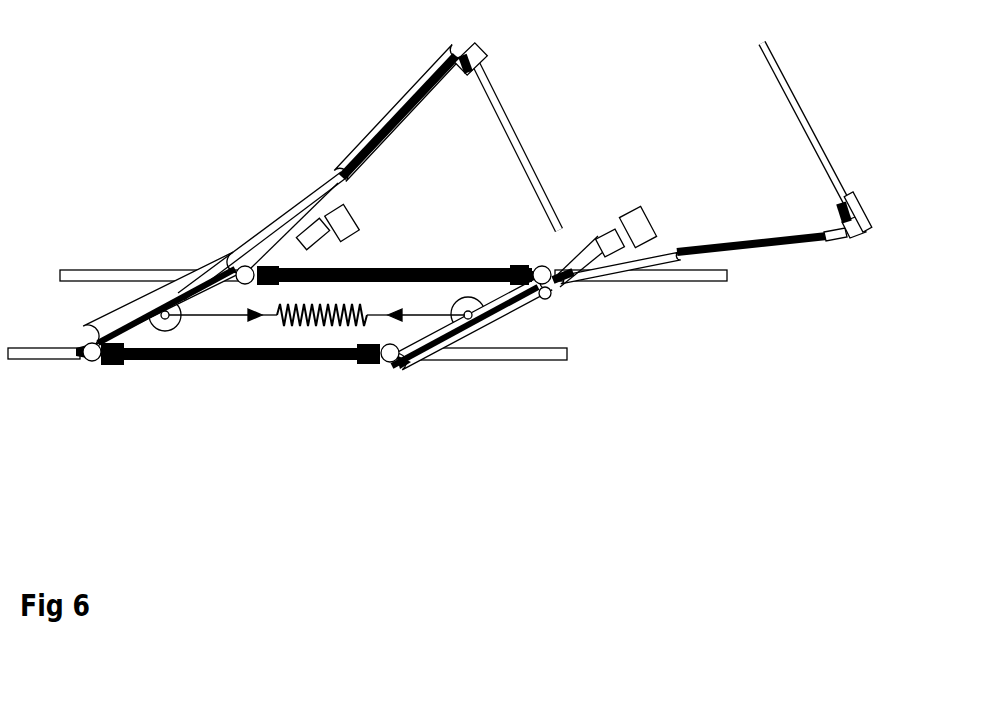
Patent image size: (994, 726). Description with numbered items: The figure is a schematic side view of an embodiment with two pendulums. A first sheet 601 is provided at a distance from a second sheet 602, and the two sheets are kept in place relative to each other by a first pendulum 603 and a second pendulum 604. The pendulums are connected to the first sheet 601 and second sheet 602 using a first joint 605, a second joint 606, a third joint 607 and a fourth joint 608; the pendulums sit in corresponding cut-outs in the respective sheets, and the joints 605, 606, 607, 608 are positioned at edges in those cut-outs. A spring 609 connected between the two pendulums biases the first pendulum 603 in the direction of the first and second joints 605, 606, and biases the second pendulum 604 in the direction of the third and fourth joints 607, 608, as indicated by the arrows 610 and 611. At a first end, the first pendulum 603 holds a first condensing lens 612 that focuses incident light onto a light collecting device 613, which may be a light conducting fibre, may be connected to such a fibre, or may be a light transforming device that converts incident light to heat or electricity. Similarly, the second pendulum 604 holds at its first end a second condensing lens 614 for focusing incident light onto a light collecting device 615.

The first sheet 601 is at (727, 281).
The second sheet 602 is at (547, 362).
The first pendulum 603 is at (416, 82).
The second pendulum 604 is at (770, 250).
The first joint 605 is at (262, 258).
The second joint 606 is at (110, 362).
The third joint 607 is at (548, 302).
The fourth joint 608 is at (370, 372).
The spring 609 is at (188, 294).
The arrow 610 is at (258, 325).
The arrow 611 is at (385, 316).
The first condensing lens 612 is at (507, 120).
The light collecting device 613 is at (340, 222).
The second condensing lens 614 is at (813, 137).
The light collecting device 615 is at (597, 230).